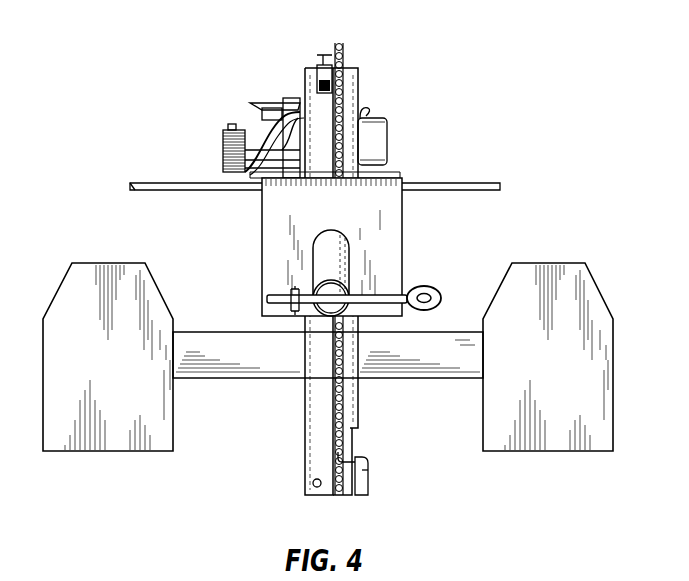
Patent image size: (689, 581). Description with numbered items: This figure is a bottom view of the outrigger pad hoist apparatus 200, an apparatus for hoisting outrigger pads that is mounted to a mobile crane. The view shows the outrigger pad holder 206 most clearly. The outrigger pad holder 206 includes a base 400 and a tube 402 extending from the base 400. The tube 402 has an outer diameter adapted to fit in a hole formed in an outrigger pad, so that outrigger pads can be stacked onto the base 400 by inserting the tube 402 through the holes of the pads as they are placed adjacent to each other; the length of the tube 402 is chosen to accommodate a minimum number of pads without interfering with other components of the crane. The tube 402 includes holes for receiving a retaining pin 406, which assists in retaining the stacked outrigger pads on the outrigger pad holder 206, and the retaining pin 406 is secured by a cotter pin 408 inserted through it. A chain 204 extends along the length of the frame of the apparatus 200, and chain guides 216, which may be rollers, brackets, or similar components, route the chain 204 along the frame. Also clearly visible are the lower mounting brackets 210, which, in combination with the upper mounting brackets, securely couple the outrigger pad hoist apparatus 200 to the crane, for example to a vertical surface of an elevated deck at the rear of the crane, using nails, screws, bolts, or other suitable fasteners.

The outrigger pad hoist apparatus 200 is at (145, 50).
The chain 204 is at (348, 413).
The outrigger pad holder 206 is at (402, 220).
The lower mounting brackets 210 is at (93, 445).
The chain guides 216 is at (360, 485).
The base 400 is at (272, 215).
The tube 402 is at (345, 270).
The retaining pin 406 is at (425, 290).
The cotter pin 408 is at (287, 312).